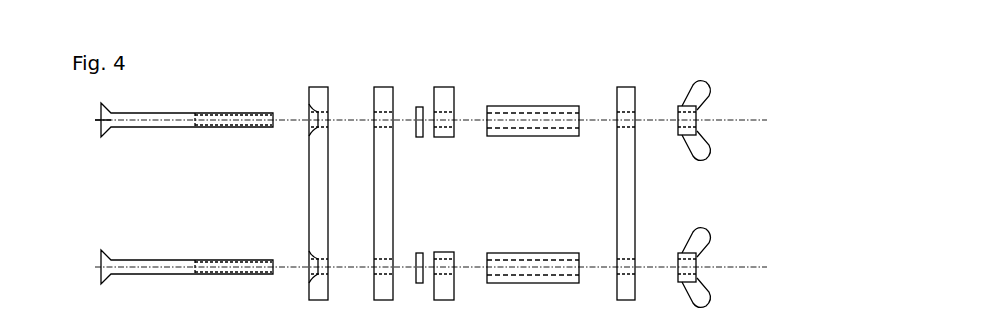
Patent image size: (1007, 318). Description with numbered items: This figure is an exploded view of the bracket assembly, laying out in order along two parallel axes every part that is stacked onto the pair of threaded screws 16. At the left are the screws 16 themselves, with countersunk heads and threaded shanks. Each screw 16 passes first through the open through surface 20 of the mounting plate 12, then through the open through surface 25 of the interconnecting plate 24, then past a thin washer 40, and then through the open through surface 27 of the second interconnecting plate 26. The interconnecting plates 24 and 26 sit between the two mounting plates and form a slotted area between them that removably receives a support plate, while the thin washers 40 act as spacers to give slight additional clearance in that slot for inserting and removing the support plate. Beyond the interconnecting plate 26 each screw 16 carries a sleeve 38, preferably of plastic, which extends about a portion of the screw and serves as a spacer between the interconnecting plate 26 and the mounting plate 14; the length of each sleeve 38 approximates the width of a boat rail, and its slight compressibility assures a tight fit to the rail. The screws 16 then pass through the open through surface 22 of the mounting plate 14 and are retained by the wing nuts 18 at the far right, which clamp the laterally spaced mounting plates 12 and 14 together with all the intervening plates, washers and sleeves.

The mounting plate 12 is at (318, 87).
The mounting plate 14 is at (625, 87).
The threaded screw 16 is at (148, 260).
The wing nut 18 is at (705, 88).
The open through surface 20 is at (305, 118).
The open through surface 22 is at (636, 118).
The interconnecting plate 24 is at (382, 87).
The open through surface 25 is at (373, 118).
The interconnecting plate 26 is at (442, 87).
The open through surface 27 is at (453, 118).
The sleeve 38 is at (517, 106).
The thin washer 40 is at (419, 107).